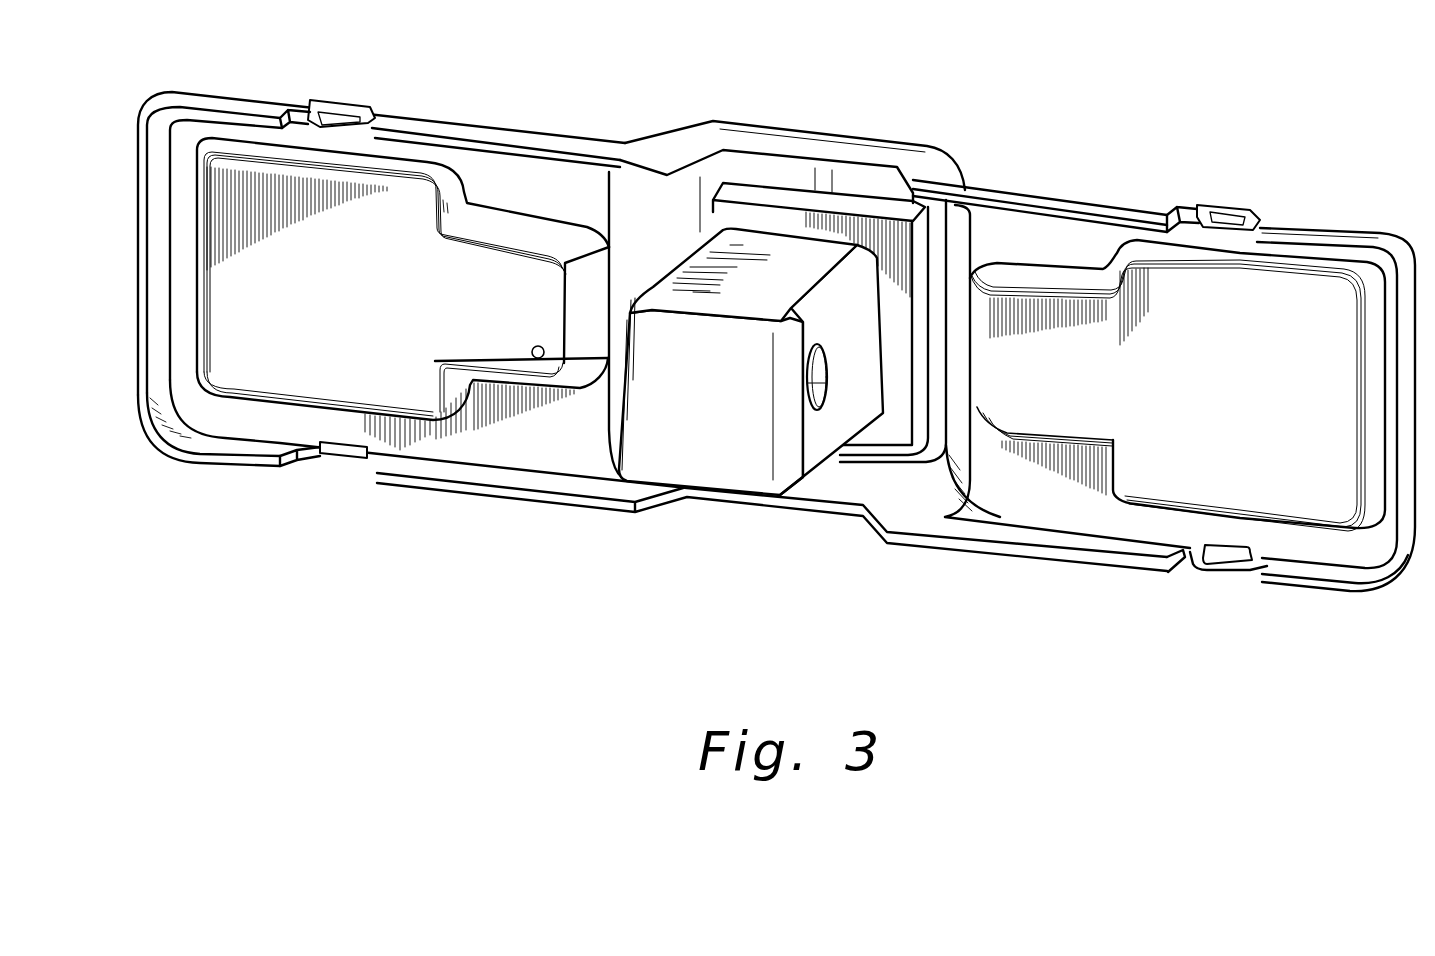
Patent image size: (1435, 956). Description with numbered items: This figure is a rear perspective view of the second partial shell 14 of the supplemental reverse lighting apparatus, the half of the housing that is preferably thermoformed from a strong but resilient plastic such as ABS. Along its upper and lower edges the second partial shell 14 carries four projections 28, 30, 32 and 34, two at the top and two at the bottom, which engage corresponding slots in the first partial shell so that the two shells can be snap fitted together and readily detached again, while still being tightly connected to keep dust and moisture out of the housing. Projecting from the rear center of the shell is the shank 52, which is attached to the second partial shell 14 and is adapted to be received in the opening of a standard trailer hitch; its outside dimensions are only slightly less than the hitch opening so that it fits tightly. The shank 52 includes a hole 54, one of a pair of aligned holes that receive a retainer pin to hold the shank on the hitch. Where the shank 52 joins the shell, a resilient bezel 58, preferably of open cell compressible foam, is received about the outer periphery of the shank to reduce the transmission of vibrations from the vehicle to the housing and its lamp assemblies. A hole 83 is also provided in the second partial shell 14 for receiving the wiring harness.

The second partial shell 14 is at (292, 305).
The projection 28 is at (353, 99).
The projection 30 is at (1229, 216).
The projection 32 is at (340, 462).
The projection 34 is at (1220, 570).
The shank 52 is at (767, 434).
The hole 54 is at (827, 367).
The resilient bezel 58 is at (897, 243).
The hole 83 is at (536, 359).